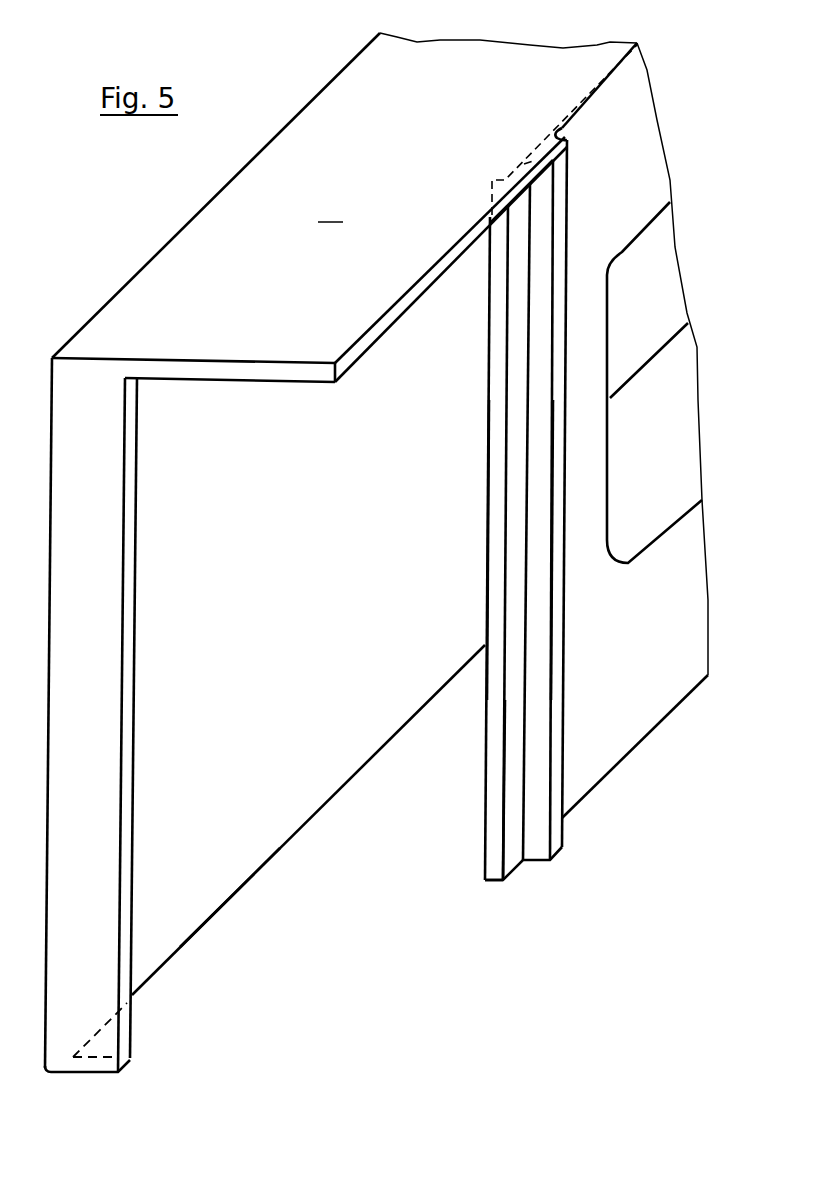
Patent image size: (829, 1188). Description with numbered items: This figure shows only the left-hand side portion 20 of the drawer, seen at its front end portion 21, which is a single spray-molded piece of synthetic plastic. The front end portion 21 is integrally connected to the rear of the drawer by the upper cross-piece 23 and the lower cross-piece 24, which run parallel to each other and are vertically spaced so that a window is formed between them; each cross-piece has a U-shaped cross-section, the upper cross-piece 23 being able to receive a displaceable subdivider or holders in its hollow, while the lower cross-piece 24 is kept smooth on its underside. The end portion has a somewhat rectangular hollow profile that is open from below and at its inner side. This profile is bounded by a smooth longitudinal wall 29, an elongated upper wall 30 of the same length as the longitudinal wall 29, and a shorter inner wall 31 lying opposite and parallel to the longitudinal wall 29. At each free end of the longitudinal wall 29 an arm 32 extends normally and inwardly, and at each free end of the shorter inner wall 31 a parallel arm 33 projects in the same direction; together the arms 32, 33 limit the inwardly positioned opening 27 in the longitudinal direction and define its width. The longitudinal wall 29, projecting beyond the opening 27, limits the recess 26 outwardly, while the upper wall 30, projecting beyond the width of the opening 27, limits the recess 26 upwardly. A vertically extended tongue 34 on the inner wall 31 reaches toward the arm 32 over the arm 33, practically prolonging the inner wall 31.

The side portion 20 is at (343, 70).
The front end portion 21 is at (192, 220).
The upper cross-piece 23 is at (610, 180).
The lower cross-piece 24 is at (628, 475).
The recess 26 is at (295, 805).
The opening 27 is at (467, 878).
The longitudinal wall 29 is at (230, 887).
The upper wall 30 is at (330, 209).
The inner wall 31 is at (530, 148).
The arm 32 is at (95, 960).
The arm 33 is at (557, 638).
The tongue 34 is at (488, 493).